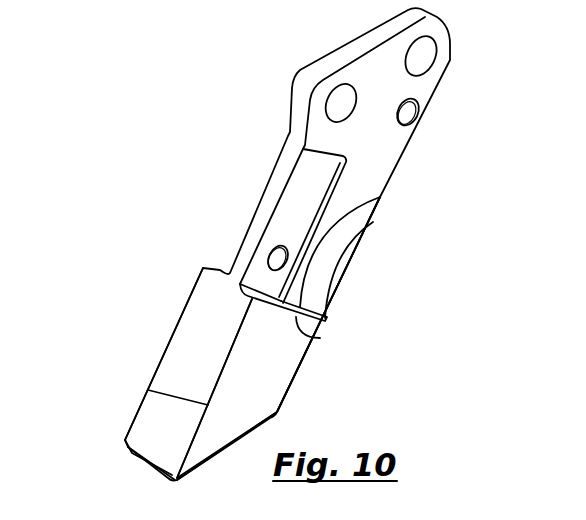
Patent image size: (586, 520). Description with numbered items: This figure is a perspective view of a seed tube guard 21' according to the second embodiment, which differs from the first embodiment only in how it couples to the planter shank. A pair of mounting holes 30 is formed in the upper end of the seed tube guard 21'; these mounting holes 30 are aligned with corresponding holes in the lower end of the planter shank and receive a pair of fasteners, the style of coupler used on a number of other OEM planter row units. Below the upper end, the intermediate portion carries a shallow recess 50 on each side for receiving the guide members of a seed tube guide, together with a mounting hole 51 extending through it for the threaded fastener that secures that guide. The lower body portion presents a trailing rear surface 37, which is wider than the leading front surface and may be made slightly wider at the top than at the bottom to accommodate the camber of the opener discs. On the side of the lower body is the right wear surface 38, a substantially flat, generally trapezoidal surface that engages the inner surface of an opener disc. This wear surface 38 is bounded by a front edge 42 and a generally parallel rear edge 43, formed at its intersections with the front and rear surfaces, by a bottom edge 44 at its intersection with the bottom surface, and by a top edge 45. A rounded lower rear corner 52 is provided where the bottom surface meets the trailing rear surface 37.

The seed tube guard 21' is at (355, 244).
The mounting holes 30 is at (341, 102).
The shallow recess 50 is at (288, 205).
The mounting hole 51 is at (277, 260).
The top edge 45 is at (318, 338).
The trailing rear surface 37 is at (178, 357).
The rear edge 43 is at (198, 404).
The rounded lower rear corner 52 is at (133, 456).
The bottom edge 44 is at (238, 447).
The right wear surface 38 is at (263, 388).
The front edge 42 is at (292, 392).